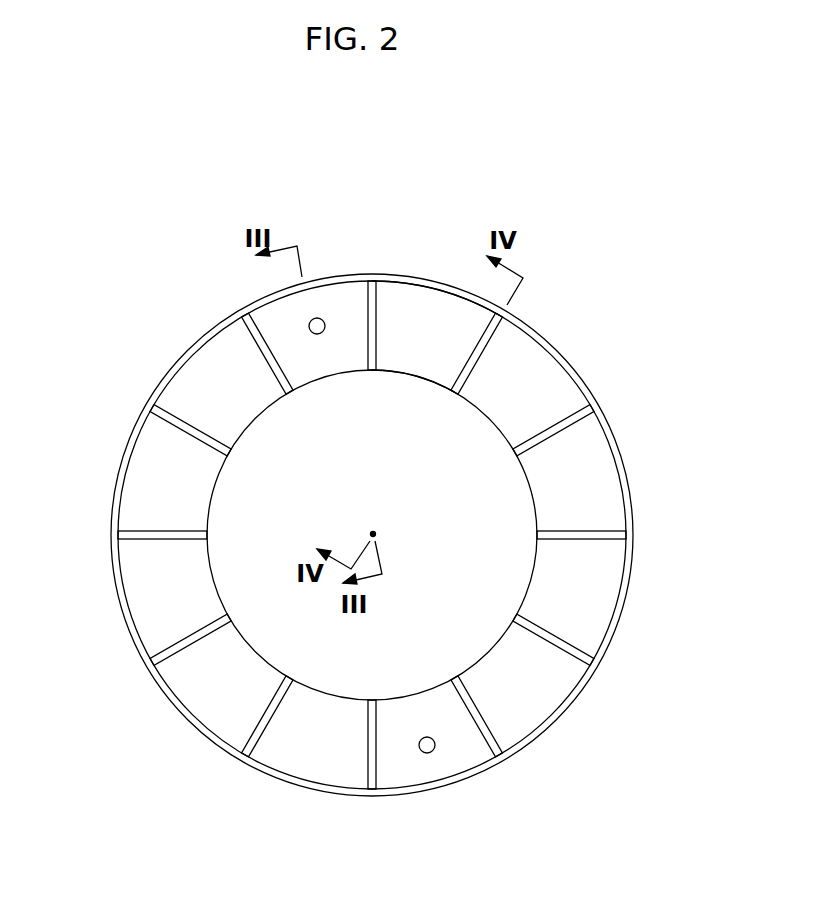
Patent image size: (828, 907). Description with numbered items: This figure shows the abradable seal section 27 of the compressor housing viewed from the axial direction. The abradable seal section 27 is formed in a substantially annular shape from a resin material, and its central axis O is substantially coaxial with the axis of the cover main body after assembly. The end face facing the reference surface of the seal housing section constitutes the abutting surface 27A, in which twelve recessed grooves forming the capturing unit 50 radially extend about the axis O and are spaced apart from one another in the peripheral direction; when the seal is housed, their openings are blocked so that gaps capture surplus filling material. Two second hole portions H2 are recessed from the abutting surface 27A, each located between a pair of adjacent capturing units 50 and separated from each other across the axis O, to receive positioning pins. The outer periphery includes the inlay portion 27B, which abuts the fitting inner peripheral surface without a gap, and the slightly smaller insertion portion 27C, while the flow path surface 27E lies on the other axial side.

The abradable seal section 27 is at (371, 522).
The abutting surface 27A is at (430, 312).
The inlay portion 27B is at (372, 490).
The insertion portion 27C is at (455, 280).
The flow path surface 27E is at (263, 628).
The capturing unit 50 is at (368, 313).
The second hole portion H2 is at (318, 318).
The axis O is at (377, 533).